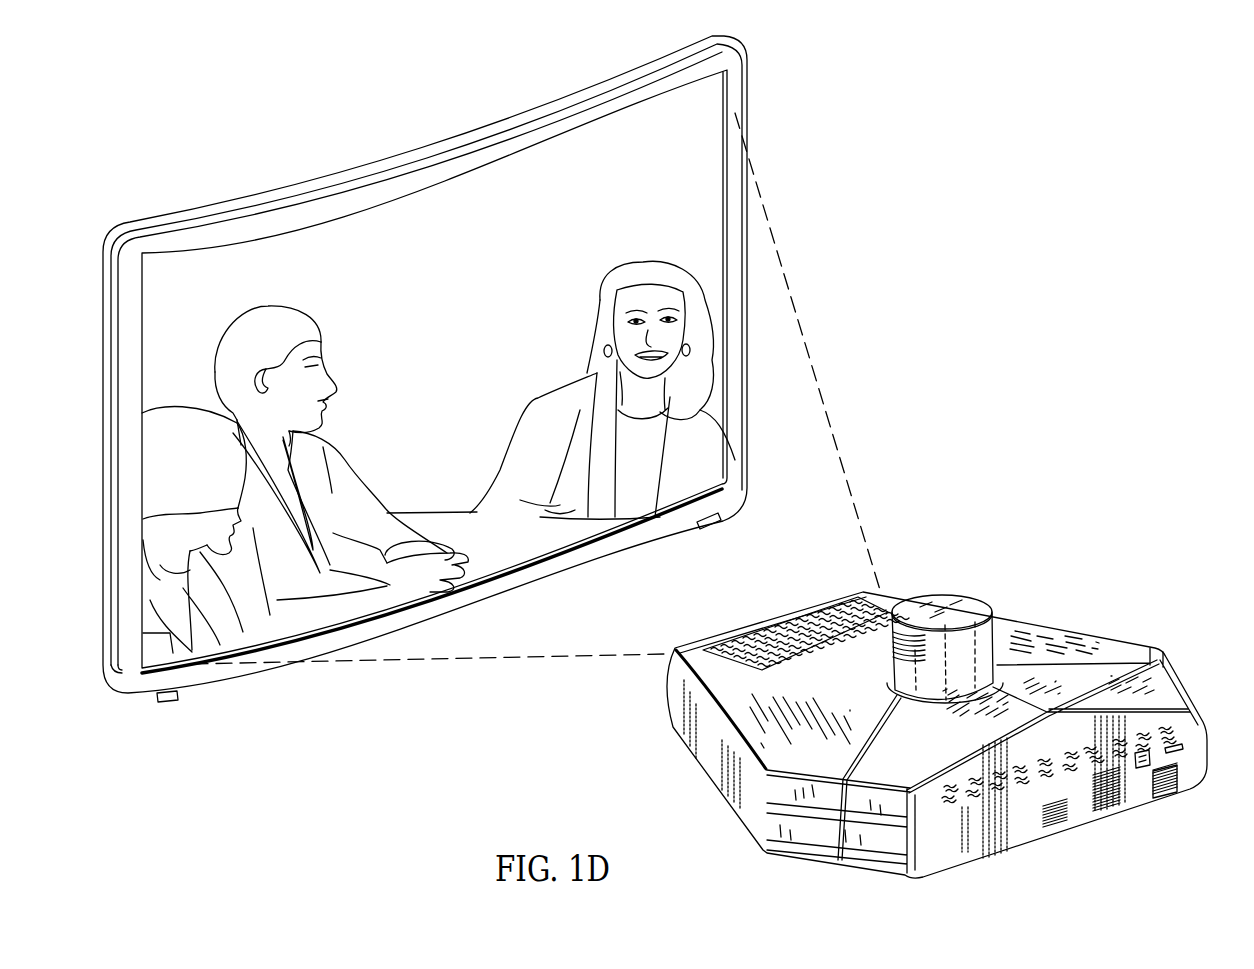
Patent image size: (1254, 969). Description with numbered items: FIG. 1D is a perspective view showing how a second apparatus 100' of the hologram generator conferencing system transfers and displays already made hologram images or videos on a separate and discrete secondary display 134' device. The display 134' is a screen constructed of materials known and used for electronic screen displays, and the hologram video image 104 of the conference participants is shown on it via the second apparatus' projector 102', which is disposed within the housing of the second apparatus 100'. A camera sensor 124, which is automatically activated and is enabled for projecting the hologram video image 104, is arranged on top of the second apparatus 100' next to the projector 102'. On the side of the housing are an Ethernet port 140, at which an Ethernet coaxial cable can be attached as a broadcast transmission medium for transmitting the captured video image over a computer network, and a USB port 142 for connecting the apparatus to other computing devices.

The second apparatus 100' is at (699, 495).
The projector 102' is at (963, 621).
The hologram video image 104 is at (712, 447).
The camera sensor 124 is at (912, 600).
The display 134' is at (438, 371).
The Ethernet port 140 is at (1147, 768).
The USB port 142 is at (1173, 791).